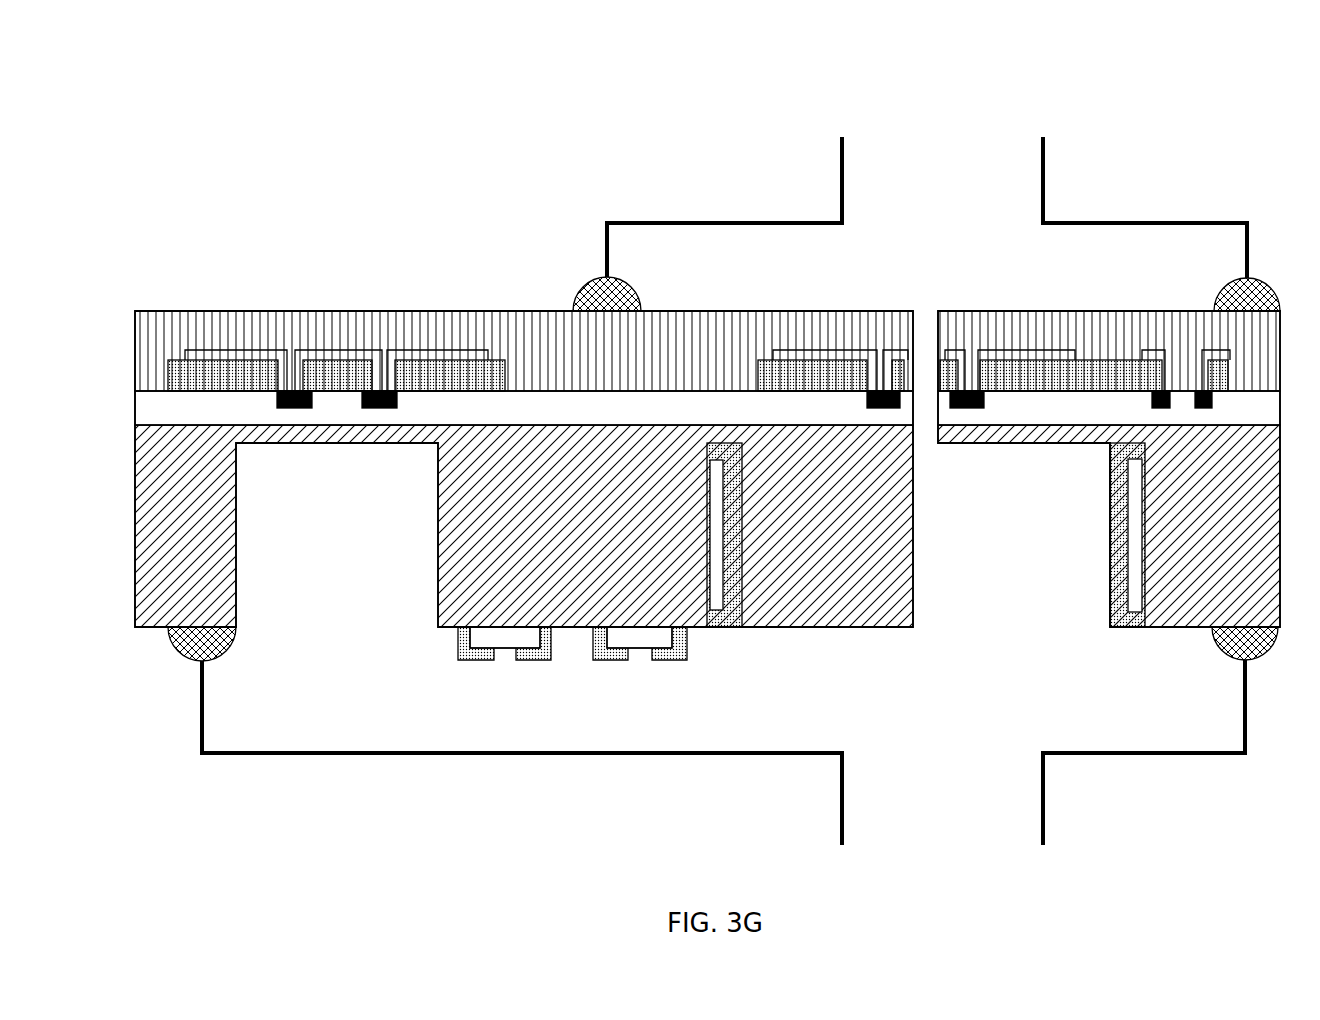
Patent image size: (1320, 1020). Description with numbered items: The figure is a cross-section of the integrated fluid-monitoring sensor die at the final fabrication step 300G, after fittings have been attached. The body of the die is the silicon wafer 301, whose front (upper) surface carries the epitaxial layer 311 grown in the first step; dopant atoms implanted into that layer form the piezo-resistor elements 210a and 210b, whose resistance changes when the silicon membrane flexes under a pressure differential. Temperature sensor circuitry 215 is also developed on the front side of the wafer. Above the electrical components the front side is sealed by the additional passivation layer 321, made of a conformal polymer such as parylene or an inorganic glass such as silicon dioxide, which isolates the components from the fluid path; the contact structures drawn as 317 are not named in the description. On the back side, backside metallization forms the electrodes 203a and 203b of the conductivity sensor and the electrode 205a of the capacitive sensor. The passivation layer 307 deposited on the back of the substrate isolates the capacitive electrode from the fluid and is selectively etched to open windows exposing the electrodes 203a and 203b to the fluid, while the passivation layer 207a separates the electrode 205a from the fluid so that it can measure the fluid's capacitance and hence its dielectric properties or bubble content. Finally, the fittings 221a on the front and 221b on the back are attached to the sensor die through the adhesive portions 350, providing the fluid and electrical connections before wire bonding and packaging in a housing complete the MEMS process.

The fabrication step 300G is at (282, 78).
The silicon wafer 301 is at (557, 541).
The epitaxial layer 311 is at (658, 400).
The passivation layer 321 is at (685, 351).
The passivation layer 307 is at (165, 372).
The liner / barrier layer 317 is at (230, 348).
The piezo-resistor element 210a is at (378, 410).
The piezo-resistor element 210b is at (965, 410).
The temperature sensor circuitry 215 is at (1160, 410).
The passivation layer 207a is at (745, 500).
The electrode 205a is at (723, 587).
The electrode 203a is at (497, 648).
The electrode 203b is at (640, 640).
The adhesive portion 350 is at (605, 300).
The fitting 221a is at (725, 222).
The fitting 221b is at (320, 753).